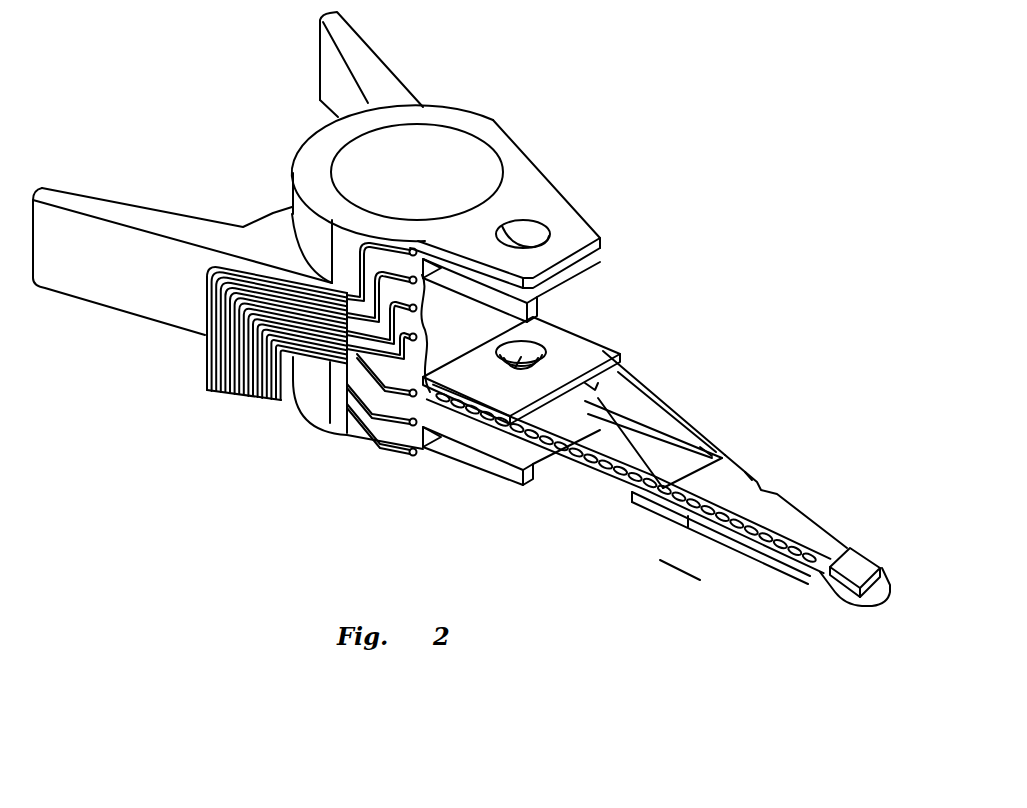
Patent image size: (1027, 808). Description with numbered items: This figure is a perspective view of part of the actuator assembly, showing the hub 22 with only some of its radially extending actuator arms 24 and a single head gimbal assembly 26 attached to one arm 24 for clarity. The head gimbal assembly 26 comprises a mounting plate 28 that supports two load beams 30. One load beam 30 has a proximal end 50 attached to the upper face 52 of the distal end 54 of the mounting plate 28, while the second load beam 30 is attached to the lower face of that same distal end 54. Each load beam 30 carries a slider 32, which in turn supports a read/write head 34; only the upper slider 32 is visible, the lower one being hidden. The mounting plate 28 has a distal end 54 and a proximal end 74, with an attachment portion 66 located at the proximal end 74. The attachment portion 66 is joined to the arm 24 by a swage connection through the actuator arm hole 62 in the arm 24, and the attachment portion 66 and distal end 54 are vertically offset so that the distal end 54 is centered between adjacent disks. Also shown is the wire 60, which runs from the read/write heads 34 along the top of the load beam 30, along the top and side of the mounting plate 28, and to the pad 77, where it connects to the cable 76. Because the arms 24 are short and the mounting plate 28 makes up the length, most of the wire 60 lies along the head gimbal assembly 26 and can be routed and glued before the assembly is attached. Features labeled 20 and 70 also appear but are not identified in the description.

The actuator arm assembly 20 is at (355, 522).
The hub 22 is at (470, 107).
The actuator arm 24 is at (599, 250).
The head gimbal assembly 26 is at (664, 590).
The mounting plate 28 is at (677, 407).
The load beam 30 is at (808, 511).
The slider 32 is at (862, 572).
The read/write head 34 is at (866, 592).
The proximal end 50 is at (748, 495).
The upper face 52 is at (707, 442).
The distal end 54 is at (653, 513).
The wire 60 is at (607, 470).
The actuator arm hole 62 is at (553, 231).
The attachment portion 66 is at (583, 363).
The spacer plate 70 is at (500, 380).
The proximal end 74 is at (575, 331).
The cable 76 is at (203, 347).
The pad 77 is at (413, 452).